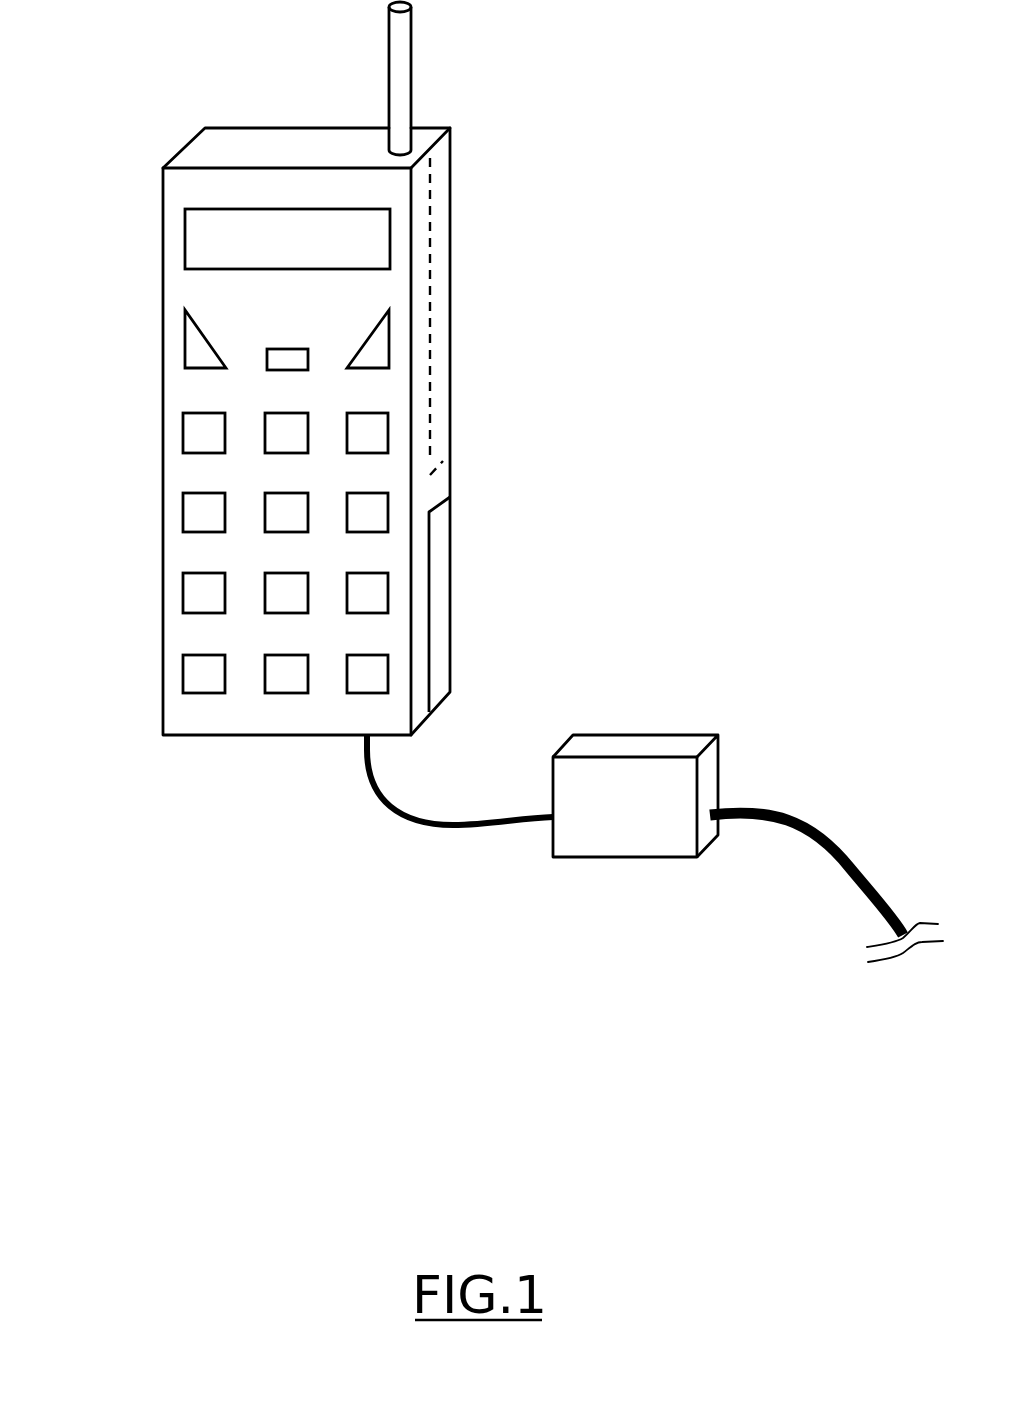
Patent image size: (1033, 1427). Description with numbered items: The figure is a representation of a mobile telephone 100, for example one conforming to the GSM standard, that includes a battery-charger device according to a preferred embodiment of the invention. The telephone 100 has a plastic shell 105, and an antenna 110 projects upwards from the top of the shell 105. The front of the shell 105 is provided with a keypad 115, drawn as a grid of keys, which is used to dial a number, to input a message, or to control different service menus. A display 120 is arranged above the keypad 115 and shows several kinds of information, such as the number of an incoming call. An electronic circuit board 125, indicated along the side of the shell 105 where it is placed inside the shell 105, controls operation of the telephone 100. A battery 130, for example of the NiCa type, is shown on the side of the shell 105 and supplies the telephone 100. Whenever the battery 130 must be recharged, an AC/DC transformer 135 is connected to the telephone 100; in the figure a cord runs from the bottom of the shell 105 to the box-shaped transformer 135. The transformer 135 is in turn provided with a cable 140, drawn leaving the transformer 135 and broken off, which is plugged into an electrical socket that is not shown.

The mobile telephone 100 is at (105, 98).
The shell 105 is at (205, 735).
The antenna 110 is at (412, 62).
The keypad 115 is at (200, 492).
The display 120 is at (248, 270).
The electronic circuit board 125 is at (443, 227).
The battery 130 is at (443, 590).
The AC/DC transformer 135 is at (617, 735).
The cable 140 is at (803, 813).